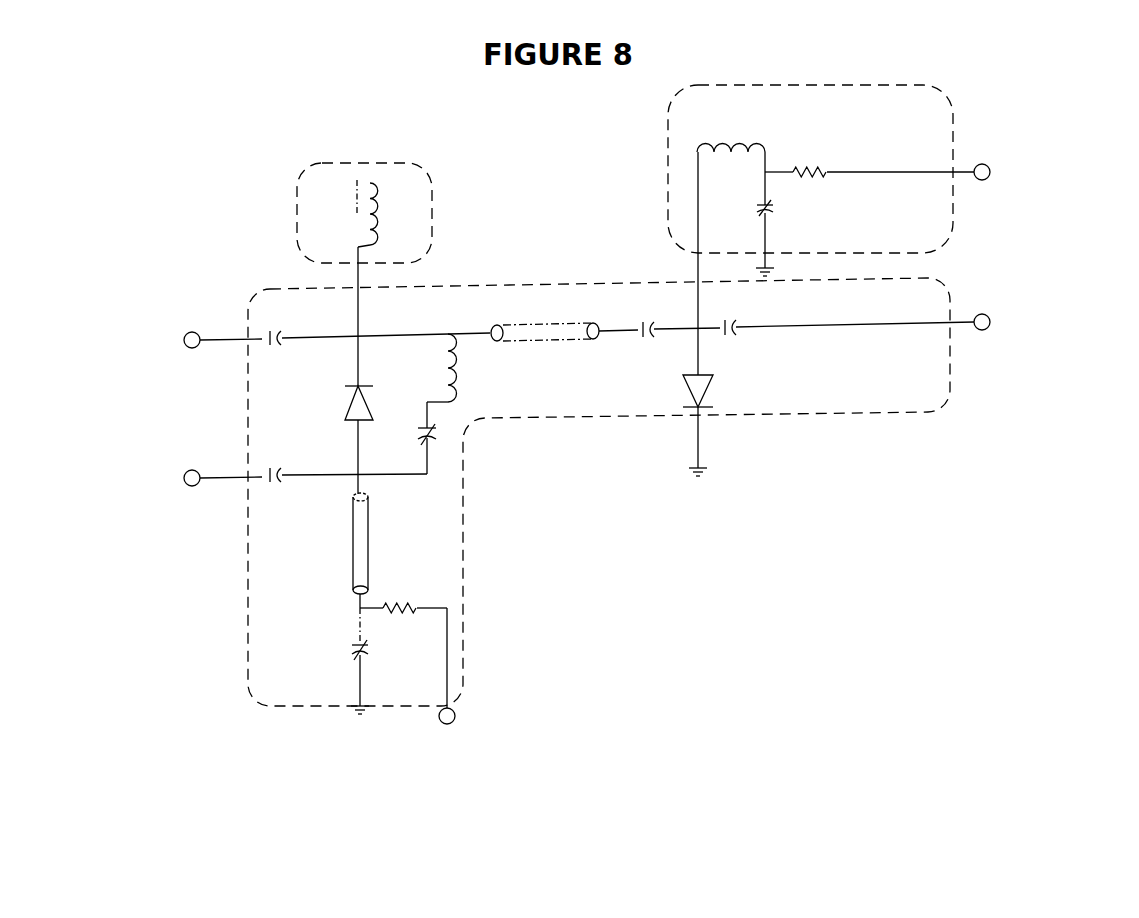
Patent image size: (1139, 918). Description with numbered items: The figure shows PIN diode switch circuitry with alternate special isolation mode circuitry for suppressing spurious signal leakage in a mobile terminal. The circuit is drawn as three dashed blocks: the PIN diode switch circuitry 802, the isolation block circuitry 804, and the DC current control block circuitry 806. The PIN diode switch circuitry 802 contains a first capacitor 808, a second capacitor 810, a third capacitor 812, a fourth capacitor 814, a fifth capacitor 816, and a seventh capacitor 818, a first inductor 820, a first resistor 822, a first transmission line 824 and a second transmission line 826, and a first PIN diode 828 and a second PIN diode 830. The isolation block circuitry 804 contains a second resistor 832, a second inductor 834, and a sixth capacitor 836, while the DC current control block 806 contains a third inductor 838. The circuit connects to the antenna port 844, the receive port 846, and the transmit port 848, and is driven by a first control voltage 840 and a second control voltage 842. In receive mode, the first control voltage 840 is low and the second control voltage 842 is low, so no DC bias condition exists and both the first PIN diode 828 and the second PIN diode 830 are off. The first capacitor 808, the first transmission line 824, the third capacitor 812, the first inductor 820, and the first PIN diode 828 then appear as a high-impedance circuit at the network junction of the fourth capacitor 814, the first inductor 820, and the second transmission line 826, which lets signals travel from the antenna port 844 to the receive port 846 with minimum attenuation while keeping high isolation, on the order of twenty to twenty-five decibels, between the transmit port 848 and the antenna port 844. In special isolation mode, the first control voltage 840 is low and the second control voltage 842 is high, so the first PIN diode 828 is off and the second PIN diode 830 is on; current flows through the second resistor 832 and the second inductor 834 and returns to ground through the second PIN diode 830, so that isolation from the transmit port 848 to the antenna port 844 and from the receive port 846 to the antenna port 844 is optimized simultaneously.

The PIN diode switch circuitry 802 is at (280, 707).
The isolation block circuitry 804 is at (668, 152).
The DC current control block circuitry 806 is at (297, 232).
The capacitor C1 808 is at (361, 653).
The capacitor C2 810 is at (278, 480).
The capacitor C3 812 is at (424, 438).
The capacitor C4 814 is at (282, 337).
The capacitor C5 816 is at (734, 333).
The capacitor C7 818 is at (650, 333).
The inductor L1 820 is at (452, 372).
The resistor R1 822 is at (394, 609).
The transmission line TRL-1 824 is at (356, 522).
The transmission line TRL-2 826 is at (505, 342).
The PIN diode D1 828 is at (358, 385).
The PIN diode D2 830 is at (702, 406).
The resistor R2 832 is at (824, 170).
The inductor L2 834 is at (750, 152).
The capacitor C6 836 is at (769, 212).
The inductor L3 838 is at (372, 227).
The Vcontrol 1 840 is at (452, 724).
The Vcontrol 2 842 is at (986, 180).
The ANT port 844 is at (190, 348).
The RX port 846 is at (986, 330).
The TX port 848 is at (190, 486).